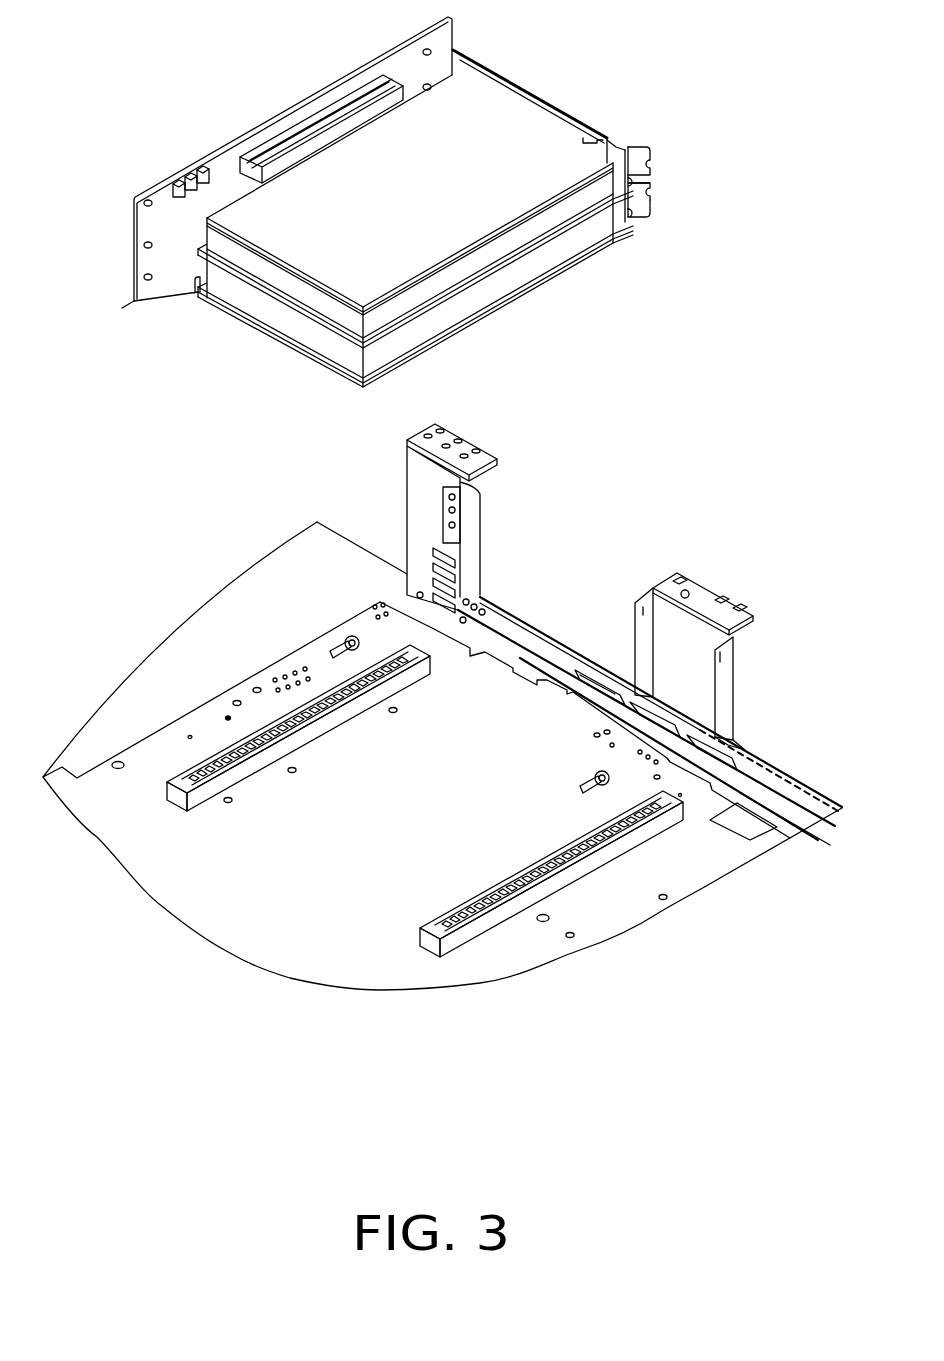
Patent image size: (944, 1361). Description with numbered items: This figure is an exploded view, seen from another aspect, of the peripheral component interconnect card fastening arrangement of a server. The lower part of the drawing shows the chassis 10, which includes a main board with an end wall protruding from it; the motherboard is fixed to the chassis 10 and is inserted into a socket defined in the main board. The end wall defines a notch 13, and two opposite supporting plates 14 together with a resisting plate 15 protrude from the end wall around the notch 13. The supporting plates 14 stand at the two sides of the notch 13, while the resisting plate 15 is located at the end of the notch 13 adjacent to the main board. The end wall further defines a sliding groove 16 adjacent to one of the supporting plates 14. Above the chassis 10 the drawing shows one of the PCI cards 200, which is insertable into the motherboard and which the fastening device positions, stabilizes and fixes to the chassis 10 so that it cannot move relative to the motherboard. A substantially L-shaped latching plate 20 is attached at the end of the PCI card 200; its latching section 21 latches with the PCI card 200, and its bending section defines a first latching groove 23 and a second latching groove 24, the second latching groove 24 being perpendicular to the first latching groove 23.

The chassis 10 is at (627, 898).
The notch 13 is at (545, 578).
The supporting plates 14 is at (643, 640).
The resisting plate 15 is at (648, 684).
The sliding groove 16 is at (468, 472).
The latching plate 20 is at (610, 145).
The latching section 21 is at (639, 145).
The first latching groove 23 is at (640, 216).
The second latching groove 24 is at (648, 204).
The peripheral component interconnect card 200 is at (553, 218).